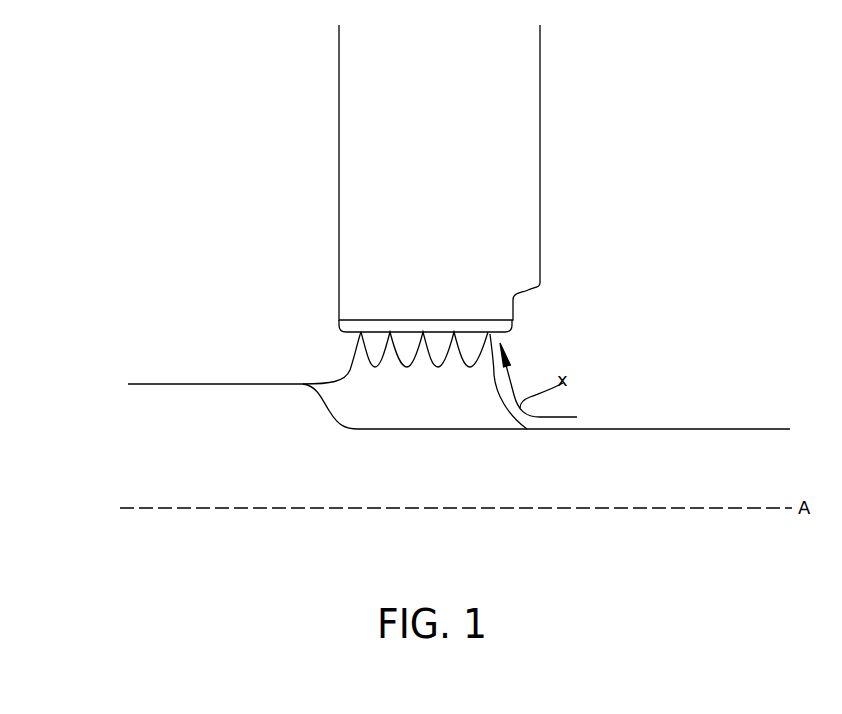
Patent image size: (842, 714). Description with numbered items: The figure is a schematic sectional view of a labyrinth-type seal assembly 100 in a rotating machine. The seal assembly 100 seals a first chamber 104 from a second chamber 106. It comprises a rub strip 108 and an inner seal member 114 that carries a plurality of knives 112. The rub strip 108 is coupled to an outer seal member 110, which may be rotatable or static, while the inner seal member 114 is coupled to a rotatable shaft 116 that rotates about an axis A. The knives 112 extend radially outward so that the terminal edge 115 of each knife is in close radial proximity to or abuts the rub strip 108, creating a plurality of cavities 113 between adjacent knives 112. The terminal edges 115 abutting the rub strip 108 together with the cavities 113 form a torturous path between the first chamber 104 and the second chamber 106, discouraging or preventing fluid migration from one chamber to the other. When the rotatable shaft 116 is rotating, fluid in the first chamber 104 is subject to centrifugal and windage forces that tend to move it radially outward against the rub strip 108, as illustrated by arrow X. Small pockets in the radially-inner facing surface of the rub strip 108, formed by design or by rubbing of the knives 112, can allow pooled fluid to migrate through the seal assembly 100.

The labyrinth-type seal assembly 100 is at (283, 303).
The first chamber 104 is at (758, 273).
The second chamber 106 is at (128, 289).
The rub strip 108 is at (472, 330).
The outer seal member 110 is at (450, 106).
The knives 112 is at (483, 357).
The cavities 113 is at (467, 347).
The inner seal member 114 is at (427, 418).
The terminal edge 115 is at (493, 336).
The rotatable shaft 116 is at (705, 477).